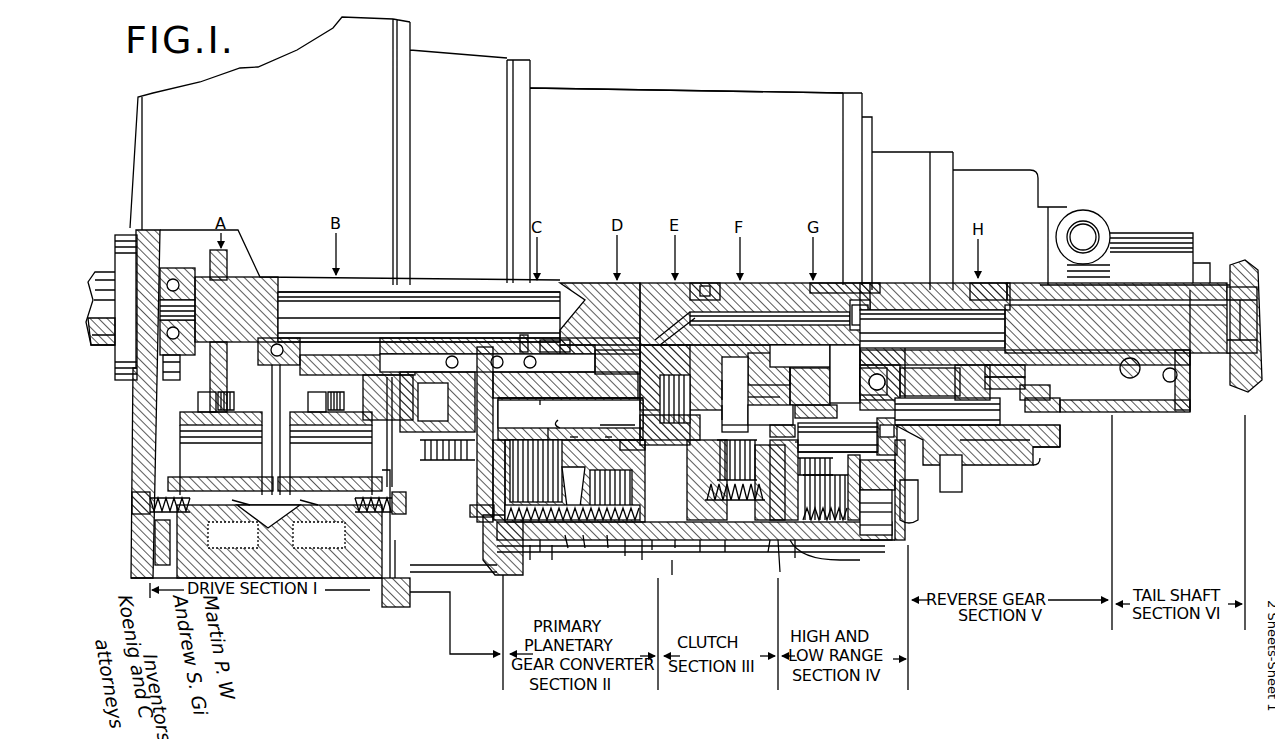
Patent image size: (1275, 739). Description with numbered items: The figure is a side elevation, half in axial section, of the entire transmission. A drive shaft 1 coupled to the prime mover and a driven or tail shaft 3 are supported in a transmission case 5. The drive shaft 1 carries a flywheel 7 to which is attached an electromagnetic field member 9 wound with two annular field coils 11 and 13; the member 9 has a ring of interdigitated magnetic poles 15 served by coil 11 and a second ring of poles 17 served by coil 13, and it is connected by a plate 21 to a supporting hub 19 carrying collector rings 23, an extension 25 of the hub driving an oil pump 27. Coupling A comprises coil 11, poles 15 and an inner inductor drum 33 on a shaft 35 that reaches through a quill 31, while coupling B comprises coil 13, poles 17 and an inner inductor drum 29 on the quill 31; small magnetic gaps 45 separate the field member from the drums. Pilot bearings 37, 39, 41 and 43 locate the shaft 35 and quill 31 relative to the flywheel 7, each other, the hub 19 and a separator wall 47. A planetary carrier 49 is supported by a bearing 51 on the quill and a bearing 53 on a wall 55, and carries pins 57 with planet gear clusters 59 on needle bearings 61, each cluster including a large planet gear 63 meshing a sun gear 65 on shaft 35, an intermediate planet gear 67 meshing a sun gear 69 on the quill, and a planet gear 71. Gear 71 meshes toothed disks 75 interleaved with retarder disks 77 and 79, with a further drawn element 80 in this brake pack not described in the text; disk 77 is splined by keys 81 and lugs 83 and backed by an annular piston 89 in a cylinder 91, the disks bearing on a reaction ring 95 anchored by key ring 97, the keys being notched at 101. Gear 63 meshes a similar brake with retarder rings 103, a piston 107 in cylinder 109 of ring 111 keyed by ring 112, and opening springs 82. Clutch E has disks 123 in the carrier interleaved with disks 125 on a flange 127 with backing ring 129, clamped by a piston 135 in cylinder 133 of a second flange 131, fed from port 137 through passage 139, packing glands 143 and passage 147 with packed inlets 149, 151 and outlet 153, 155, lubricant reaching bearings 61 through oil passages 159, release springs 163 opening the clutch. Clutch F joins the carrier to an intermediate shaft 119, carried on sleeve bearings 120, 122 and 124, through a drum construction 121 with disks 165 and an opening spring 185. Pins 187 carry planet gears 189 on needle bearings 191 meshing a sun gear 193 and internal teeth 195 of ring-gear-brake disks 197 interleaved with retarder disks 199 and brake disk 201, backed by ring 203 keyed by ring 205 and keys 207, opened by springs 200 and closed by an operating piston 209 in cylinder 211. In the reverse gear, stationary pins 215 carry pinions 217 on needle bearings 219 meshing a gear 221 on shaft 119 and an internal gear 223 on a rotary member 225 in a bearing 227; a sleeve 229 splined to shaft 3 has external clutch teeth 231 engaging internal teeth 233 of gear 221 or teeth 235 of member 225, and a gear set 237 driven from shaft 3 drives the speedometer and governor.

The drive shaft 1 is at (108, 345).
The driven or tail shaft 3 is at (1210, 330).
The transmission case 5 is at (789, 102).
The flywheel 7 is at (137, 428).
The electromagnetic field member 9 is at (167, 491).
The electric field coil 11 is at (233, 535).
The electric field coil 13 is at (319, 535).
The magnetic poles 15 is at (241, 510).
The magnetic poles 17 is at (303, 510).
The supporting hub 19 is at (388, 383).
The plate 21 is at (392, 492).
The collector rings 23 is at (449, 460).
The extension 25 is at (470, 325).
The oil pump 27 is at (451, 395).
The inner inductor drum 29 is at (309, 419).
The quill 31 is at (359, 341).
The inner inductor drum 33 is at (199, 419).
The shaft 35 is at (335, 318).
The pilot bearing 37 is at (174, 279).
The pilot bearing 39 is at (272, 360).
The pilot bearing 41 is at (385, 360).
The pilot bearing 43 is at (510, 325).
The magnetic gaps 45 is at (270, 488).
The separator wall 47 is at (480, 509).
The planetary carrier 49 is at (554, 340).
The bearing 51 is at (523, 335).
The bearing 53 is at (878, 373).
The wall 55 is at (887, 436).
The pins 57 is at (570, 410).
The planet gear cluster 59 is at (477, 460).
The needle bearings 61 is at (546, 427).
The large planet gear 63 is at (617, 416).
The sun gear 65 is at (600, 314).
The intermediate planet gear 67 is at (572, 417).
The sun gear 69 is at (575, 348).
The planet gear 71 is at (538, 409).
The disks 75 is at (539, 549).
The brake retarder disk 77 is at (485, 483).
The brake retarder disks 79 is at (544, 471).
The piston 80 is at (573, 487).
The keys 81 is at (549, 557).
The opening springs 82 is at (619, 491).
The lugs 83 is at (529, 558).
The annular piston 89 is at (485, 497).
The annular cylinder 91 is at (488, 529).
The reaction ring 95 is at (604, 546).
The split annular spring key ring 97 is at (581, 547).
The notches 101 is at (566, 545).
The brake retarder rings 103 is at (624, 554).
The piston 107 is at (652, 550).
The annular cylinder 109 is at (642, 557).
The ring 111 is at (675, 549).
The key ring 112 is at (677, 567).
The intermediate shaft 119 is at (880, 287).
The sleeve bearing 120 is at (810, 378).
The drum construction 121 is at (753, 395).
The sleeve bearing 122 is at (929, 347).
The clutch disks 123 is at (630, 442).
The sleeve bearing 124 is at (989, 297).
The clutch disks 125 is at (655, 399).
The flange 127 is at (670, 396).
The fixed backing ring 129 is at (620, 429).
The second flange 131 is at (737, 411).
The cylinder 133 is at (738, 425).
The piston 135 is at (737, 384).
The port 137 is at (918, 512).
The passage 139 is at (945, 478).
The packing glands 143 is at (862, 382).
The passage 147 is at (752, 348).
The inlets 149 is at (873, 325).
The packing 151 is at (827, 284).
The outlet 153 is at (738, 393).
The packing 155 is at (695, 284).
The oil passages 159 is at (587, 429).
The release springs 163 is at (812, 497).
The disks 165 is at (782, 430).
The opening spring 185 is at (762, 550).
The pins 187 is at (838, 439).
The planet gears 189 is at (837, 437).
The needle bearings 191 is at (788, 441).
The sun gear 193 is at (814, 402).
The internal teeth 195 is at (812, 466).
The ring-gear-brake disks 197 is at (879, 510).
The brake retarder disks 199 is at (879, 507).
The opening springs 200 is at (825, 556).
The brake disk 201 is at (879, 520).
The backing ring 203 is at (797, 556).
The ring 205 is at (766, 558).
The keys 207 is at (878, 535).
The operating piston 209 is at (877, 475).
The cylinder 211 is at (906, 491).
The stationary pins 215 is at (947, 411).
The pinions 217 is at (1010, 465).
The needle bearings 219 is at (1033, 459).
The gear 221 is at (928, 376).
The internal gear 223 is at (1025, 469).
The rotary member 225 is at (1033, 444).
The bearing 227 is at (1051, 390).
The sleeve 229 is at (1074, 369).
The external clutch teeth 231 is at (1005, 368).
The internal clutch teeth 233 is at (1005, 379).
The internal clutch teeth 235 is at (1041, 405).
The gear set 237 is at (1130, 378).